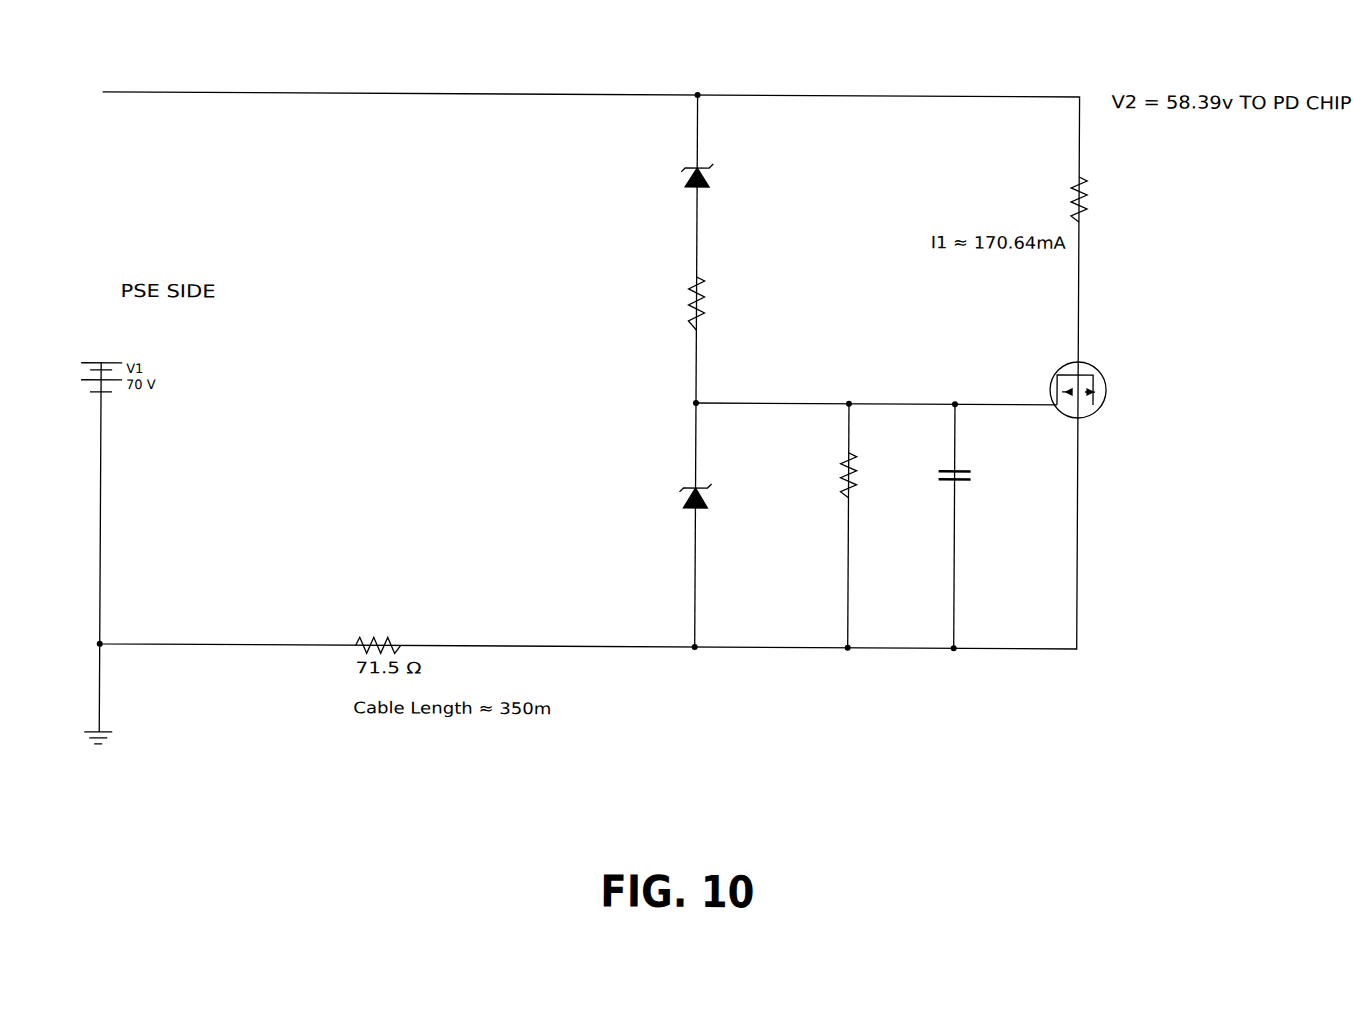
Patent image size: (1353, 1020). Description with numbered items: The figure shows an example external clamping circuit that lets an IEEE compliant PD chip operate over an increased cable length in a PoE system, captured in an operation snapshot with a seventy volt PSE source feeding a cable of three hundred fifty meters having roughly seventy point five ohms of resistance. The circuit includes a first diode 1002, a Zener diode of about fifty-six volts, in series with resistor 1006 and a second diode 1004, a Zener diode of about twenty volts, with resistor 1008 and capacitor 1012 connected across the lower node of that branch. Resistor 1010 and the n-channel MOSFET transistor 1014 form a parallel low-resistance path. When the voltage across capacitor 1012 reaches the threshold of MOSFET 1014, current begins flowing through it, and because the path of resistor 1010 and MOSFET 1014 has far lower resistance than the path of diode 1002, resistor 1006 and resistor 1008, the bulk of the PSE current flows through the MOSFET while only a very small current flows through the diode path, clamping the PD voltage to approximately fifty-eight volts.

The first diode 1002 is at (678, 172).
The second diode 1004 is at (665, 497).
The resistor 1006 is at (688, 302).
The resistor 1008 is at (840, 477).
The resistor 1010 is at (1100, 203).
The capacitor 1012 is at (973, 477).
The n-channel MOSFET transistor 1014 is at (1105, 393).